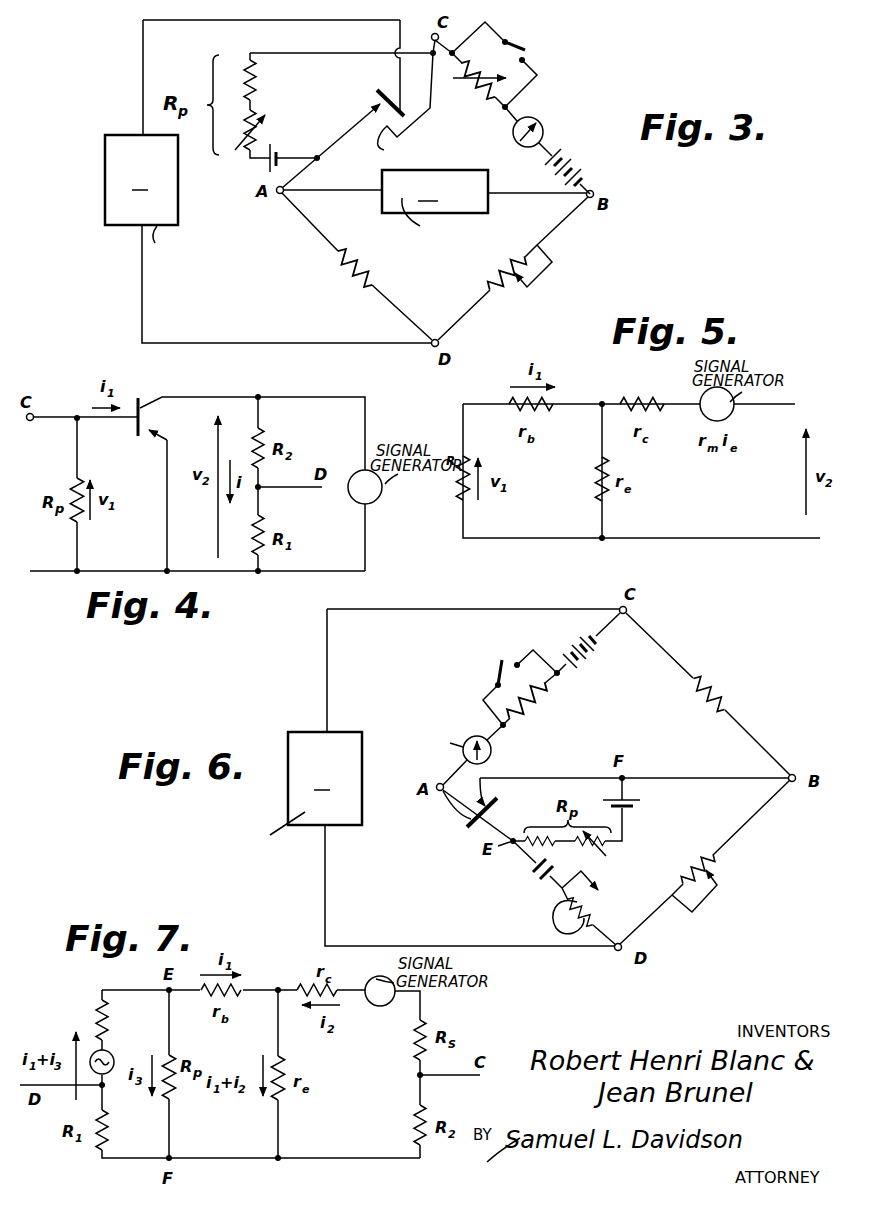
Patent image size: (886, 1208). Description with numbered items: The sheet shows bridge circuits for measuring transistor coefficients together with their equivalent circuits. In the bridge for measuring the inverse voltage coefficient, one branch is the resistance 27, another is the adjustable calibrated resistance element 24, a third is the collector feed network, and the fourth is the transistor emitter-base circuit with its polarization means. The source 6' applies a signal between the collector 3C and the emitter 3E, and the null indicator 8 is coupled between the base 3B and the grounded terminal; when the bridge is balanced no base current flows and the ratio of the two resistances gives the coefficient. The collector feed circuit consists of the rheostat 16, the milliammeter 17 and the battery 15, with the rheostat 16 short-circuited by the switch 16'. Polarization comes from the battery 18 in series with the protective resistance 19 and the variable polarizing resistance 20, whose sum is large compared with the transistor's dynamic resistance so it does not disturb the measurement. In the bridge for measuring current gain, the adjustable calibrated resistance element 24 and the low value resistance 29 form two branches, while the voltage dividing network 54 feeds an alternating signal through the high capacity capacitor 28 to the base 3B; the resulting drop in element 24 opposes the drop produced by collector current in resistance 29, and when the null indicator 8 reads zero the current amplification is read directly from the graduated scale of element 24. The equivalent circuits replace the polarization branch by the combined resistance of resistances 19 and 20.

In FIG. 3, the null indicator 8 is at (170, 193).
In FIG. 6, the null indicator 8 is at (291, 794).
In FIG. 3, the protective resistance 19 is at (242, 80).
In FIG. 6, the protective resistance 19 is at (546, 845).
In FIG. 3, the variable polarizing resistance 20 is at (242, 128).
In FIG. 6, the variable polarizing resistance 20 is at (590, 852).
In FIG. 3, the battery 18 is at (279, 148).
In FIG. 6, the battery 18 is at (632, 808).
In FIG. 3, the emitter 3E is at (352, 122).
In FIG. 3, the base 3B is at (389, 90).
In FIG. 6, the base 3B is at (484, 824).
In FIG. 3, the collector 3C is at (405, 110).
In FIG. 6, the collector 3C is at (452, 803).
In FIG. 3, the switch 16' is at (511, 62).
In FIG. 6, the switch 16' is at (506, 687).
In FIG. 3, the rheostat 16 is at (472, 99).
In FIG. 6, the rheostat 16 is at (532, 713).
In FIG. 3, the milliammeter 17 is at (545, 124).
In FIG. 6, the milliammeter 17 is at (491, 757).
In FIG. 3, the battery 15 is at (576, 166).
In FIG. 6, the battery 15 is at (589, 661).
In FIG. 3, the source 6' is at (435, 205).
In FIG. 3, the resistance 27 is at (363, 276).
In FIG. 3, the adjustable calibrated resistance element 24 is at (512, 270).
In FIG. 6, the adjustable calibrated resistance element 24 is at (716, 869).
In FIG. 6, the resistance 29 is at (720, 702).
In FIG. 6, the capacitor 28 is at (531, 872).
In FIG. 6, the voltage dividing network 54 is at (608, 920).